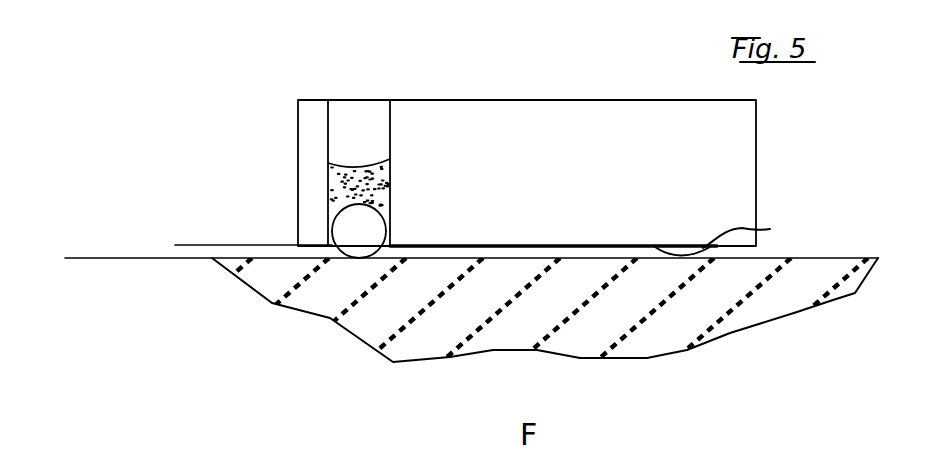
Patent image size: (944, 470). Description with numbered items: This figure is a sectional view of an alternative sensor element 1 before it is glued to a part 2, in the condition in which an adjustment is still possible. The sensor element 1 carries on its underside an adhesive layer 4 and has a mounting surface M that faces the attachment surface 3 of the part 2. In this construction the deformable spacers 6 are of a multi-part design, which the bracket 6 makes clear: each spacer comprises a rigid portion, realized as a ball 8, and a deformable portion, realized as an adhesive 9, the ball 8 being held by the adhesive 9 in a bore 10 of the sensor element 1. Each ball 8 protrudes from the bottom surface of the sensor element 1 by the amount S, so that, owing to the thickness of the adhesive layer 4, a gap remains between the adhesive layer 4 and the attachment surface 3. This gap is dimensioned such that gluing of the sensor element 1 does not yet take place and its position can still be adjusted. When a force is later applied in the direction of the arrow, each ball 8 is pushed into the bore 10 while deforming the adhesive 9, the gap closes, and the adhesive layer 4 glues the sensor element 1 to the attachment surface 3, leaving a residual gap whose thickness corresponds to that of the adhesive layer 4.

The sensor element 1 is at (486, 152).
The part 2 is at (368, 330).
The attachment surface 3 is at (503, 258).
The adhesive layer 4 is at (587, 260).
The spacers 6 is at (179, 258).
The ball 8 is at (348, 233).
The adhesive 9 is at (337, 180).
The bore 10 is at (350, 123).
The amount S is at (175, 243).
The mounting surface M is at (735, 247).